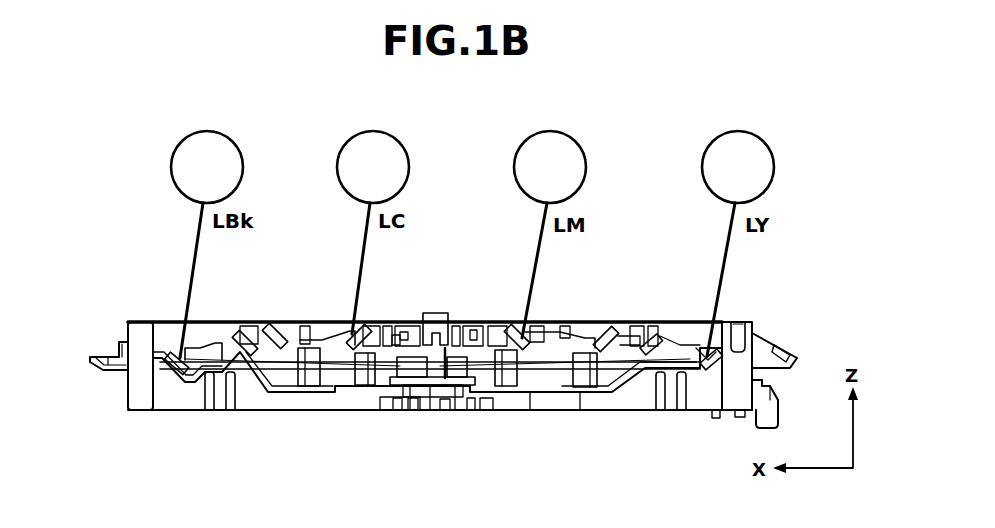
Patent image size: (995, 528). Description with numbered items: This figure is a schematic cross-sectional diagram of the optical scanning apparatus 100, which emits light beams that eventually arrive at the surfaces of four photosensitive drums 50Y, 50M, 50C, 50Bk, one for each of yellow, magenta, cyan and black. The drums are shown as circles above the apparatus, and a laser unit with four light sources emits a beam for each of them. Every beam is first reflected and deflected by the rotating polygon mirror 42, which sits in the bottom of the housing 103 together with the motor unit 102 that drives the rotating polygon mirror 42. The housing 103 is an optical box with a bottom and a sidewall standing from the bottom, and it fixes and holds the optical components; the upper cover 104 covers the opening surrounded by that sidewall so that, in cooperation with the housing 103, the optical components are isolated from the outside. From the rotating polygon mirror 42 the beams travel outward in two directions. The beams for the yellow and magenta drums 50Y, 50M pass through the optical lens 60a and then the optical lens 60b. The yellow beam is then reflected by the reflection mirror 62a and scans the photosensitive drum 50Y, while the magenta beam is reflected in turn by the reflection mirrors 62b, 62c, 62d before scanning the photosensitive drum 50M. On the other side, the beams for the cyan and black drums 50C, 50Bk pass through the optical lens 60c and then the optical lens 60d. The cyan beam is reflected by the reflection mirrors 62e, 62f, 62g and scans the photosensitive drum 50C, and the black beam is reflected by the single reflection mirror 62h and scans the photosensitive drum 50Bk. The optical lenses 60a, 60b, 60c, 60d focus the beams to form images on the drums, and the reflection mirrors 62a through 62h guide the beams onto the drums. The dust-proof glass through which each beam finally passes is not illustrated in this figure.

The optical scanning apparatus 100 is at (443, 370).
The photosensitive drum 50Bk is at (209, 140).
The photosensitive drum 50C is at (377, 140).
The photosensitive drum 50M is at (554, 140).
The photosensitive drum 50Y is at (741, 140).
The rotating polygon mirror 42 is at (424, 398).
The optical lens 60a is at (522, 390).
The optical lens 60b is at (582, 352).
The optical lens 60c is at (362, 388).
The optical lens 60d is at (312, 345).
The reflection mirror 62a is at (704, 352).
The reflection mirror 62b is at (652, 338).
The reflection mirror 62c is at (604, 330).
The reflection mirror 62d is at (516, 328).
The reflection mirror 62e is at (243, 338).
The reflection mirror 62f is at (281, 330).
The reflection mirror 62g is at (360, 328).
The reflection mirror 62h is at (160, 352).
The motor unit 102 is at (414, 407).
The housing 103 is at (553, 398).
The upper cover 104 is at (396, 322).